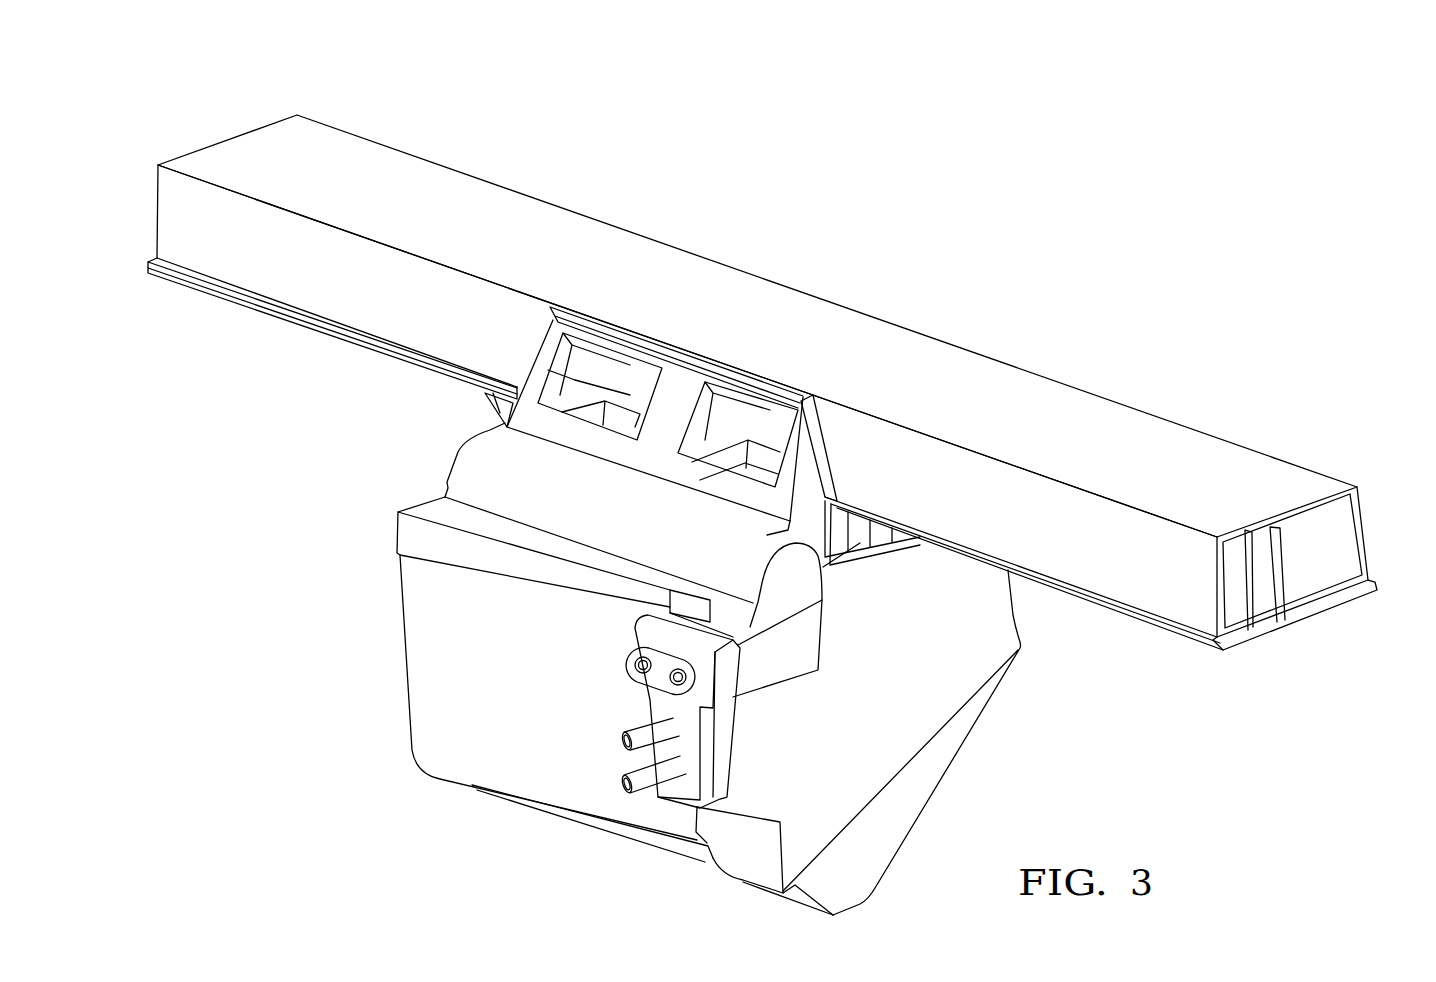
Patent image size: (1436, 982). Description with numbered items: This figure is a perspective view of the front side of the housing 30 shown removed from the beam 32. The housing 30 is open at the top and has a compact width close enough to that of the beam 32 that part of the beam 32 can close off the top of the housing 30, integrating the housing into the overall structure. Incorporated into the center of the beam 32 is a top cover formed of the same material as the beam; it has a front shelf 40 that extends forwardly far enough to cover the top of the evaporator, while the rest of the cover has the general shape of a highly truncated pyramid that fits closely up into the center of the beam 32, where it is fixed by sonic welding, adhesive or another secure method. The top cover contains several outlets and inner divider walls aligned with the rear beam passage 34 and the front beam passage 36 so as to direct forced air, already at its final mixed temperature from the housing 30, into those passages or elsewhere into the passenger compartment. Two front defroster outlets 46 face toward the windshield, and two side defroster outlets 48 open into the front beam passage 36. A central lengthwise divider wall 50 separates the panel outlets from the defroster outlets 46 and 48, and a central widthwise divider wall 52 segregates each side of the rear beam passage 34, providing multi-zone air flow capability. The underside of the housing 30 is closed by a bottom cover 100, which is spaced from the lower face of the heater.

The housing 30 is at (1015, 617).
The beam 32 is at (1040, 379).
The rear beam passage 34 is at (1332, 540).
The front beam passage 36 is at (1231, 593).
The front shelf 40 is at (460, 455).
The front defroster outlets 46 is at (650, 371).
The side defroster outlets 48 is at (568, 347).
The lengthwise divider wall 50 is at (630, 372).
The widthwise divider wall 52 is at (705, 433).
The bottom cover 100 is at (923, 787).